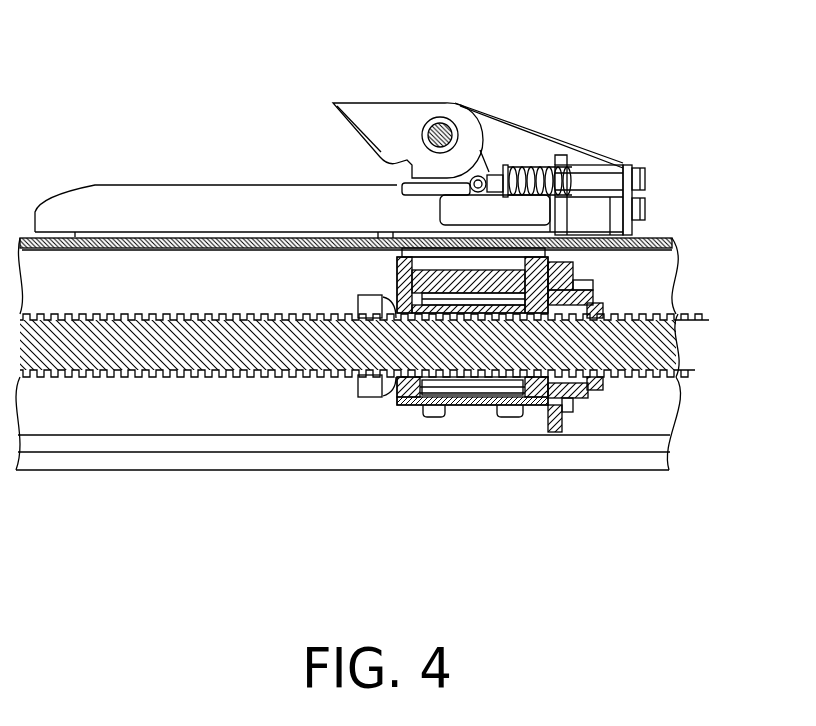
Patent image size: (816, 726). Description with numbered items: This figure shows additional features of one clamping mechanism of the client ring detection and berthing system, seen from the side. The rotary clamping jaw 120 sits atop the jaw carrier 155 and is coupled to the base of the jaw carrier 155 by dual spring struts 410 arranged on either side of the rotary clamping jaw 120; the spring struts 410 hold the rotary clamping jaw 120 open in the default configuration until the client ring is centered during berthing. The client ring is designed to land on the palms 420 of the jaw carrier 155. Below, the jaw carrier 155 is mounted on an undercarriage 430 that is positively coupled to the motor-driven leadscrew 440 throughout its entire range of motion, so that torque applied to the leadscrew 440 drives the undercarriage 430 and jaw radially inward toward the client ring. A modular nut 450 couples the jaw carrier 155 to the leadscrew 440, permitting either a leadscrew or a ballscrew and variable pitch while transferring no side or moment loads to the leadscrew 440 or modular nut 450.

The rotary clamping jaw 120 is at (385, 122).
The jaw carrier 155 is at (210, 203).
The spring struts 410 is at (530, 165).
The palms 420 is at (127, 185).
The undercarriage 430 is at (565, 278).
The leadscrew 440 is at (647, 353).
The modular nut 450 is at (477, 380).